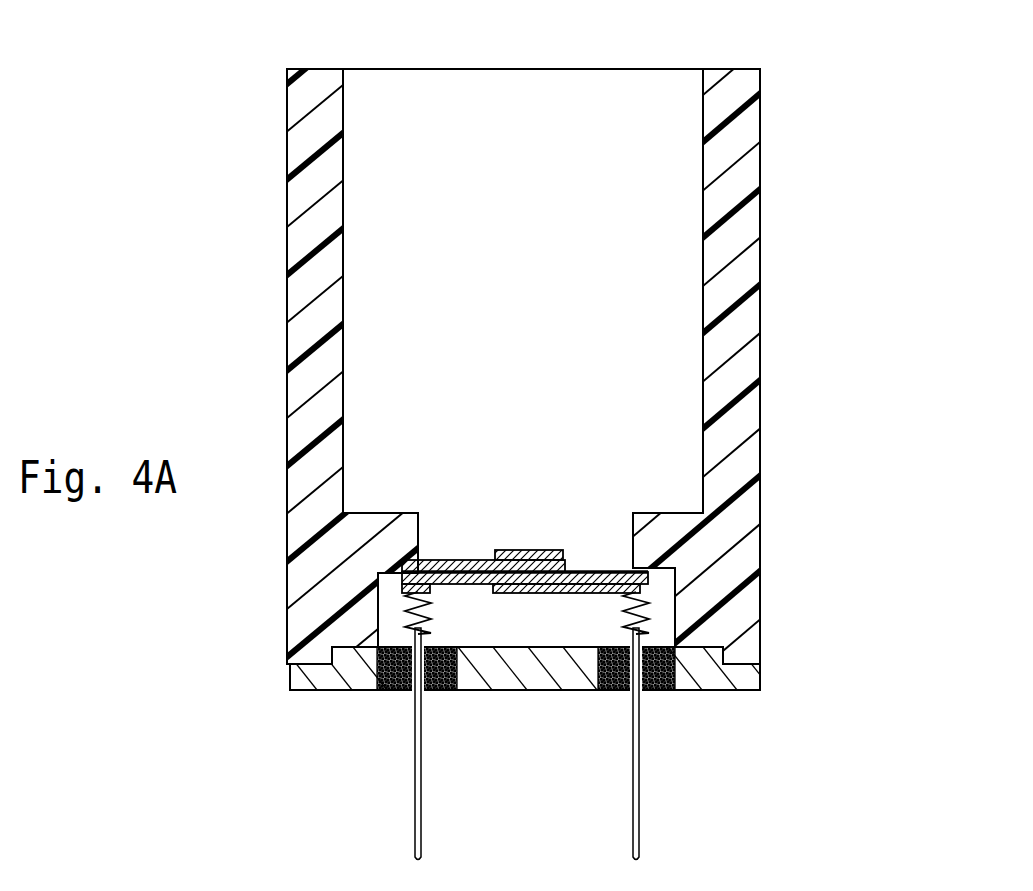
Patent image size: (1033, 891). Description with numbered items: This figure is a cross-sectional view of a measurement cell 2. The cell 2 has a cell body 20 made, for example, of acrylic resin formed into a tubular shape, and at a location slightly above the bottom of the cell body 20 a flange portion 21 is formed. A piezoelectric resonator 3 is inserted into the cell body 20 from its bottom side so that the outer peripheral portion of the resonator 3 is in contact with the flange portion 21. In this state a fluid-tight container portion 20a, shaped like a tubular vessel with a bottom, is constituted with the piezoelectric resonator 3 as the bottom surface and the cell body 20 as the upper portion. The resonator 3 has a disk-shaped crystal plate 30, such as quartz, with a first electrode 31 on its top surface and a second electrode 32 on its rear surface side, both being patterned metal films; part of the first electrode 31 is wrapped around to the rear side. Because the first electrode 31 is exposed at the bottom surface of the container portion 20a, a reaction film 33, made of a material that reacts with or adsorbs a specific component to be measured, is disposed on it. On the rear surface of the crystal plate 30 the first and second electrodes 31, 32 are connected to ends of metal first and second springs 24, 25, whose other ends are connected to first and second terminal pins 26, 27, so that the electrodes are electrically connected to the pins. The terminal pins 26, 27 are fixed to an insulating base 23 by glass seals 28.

The measurement cell 2 is at (251, 60).
The piezoelectric resonator 3 is at (525, 588).
The cell body 20 is at (760, 214).
The container portion 20a is at (614, 99).
The flange portion 21 is at (655, 513).
The insulating base 23 is at (760, 672).
The first spring 24 is at (428, 622).
The second spring 25 is at (622, 625).
The first terminal pin 26 is at (422, 817).
The second terminal pin 27 is at (639, 825).
The glass seal 28 is at (375, 690).
The crystal plate 30 is at (590, 570).
The first electrode 31 is at (446, 560).
The second electrode 32 is at (517, 593).
The reaction film 33 is at (545, 550).